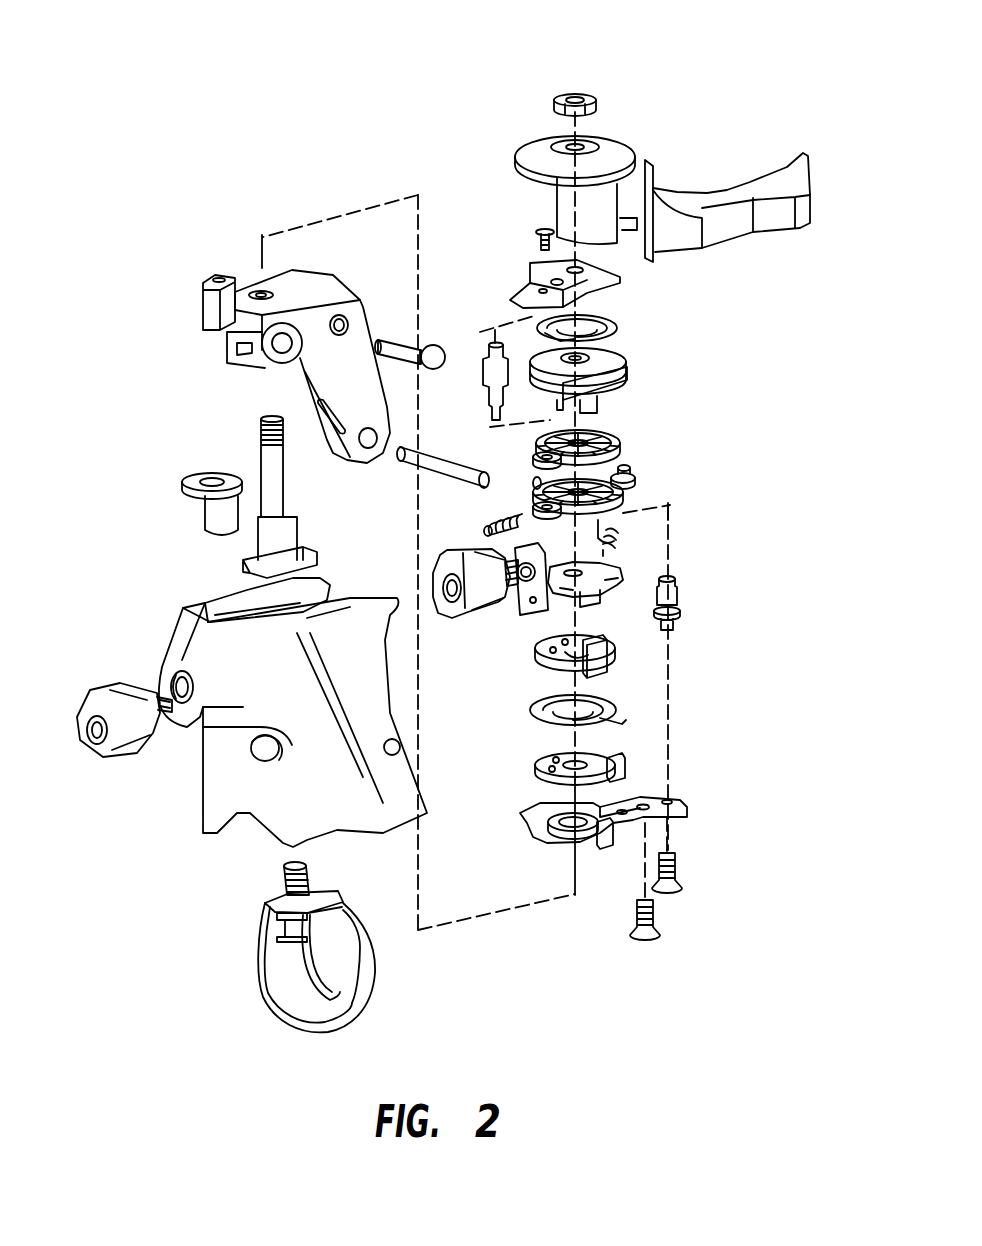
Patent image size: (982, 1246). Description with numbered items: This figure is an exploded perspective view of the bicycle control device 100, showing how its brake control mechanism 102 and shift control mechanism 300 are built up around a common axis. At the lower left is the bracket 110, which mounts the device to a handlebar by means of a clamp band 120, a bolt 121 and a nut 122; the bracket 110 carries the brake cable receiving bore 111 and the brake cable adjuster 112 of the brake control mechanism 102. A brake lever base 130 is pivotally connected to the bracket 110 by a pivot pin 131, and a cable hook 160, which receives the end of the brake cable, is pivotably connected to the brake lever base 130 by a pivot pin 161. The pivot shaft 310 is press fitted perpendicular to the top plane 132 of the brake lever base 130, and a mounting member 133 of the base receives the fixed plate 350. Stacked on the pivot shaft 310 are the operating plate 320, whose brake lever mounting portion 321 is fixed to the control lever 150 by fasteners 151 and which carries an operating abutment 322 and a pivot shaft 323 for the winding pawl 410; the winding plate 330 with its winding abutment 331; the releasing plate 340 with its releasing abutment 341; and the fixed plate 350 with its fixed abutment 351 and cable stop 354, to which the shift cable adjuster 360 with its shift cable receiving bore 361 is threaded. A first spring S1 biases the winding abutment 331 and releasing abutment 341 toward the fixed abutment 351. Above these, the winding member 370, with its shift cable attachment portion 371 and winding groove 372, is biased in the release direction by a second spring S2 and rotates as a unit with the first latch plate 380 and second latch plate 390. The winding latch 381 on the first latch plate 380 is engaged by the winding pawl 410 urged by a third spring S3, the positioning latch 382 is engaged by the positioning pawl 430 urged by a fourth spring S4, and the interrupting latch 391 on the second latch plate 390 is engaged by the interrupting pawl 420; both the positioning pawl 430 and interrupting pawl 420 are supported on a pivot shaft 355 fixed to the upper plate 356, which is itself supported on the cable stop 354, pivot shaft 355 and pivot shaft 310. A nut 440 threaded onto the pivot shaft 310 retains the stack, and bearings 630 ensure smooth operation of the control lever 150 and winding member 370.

The bicycle control device 100 is at (420, 85).
The brake control mechanism 102 is at (125, 330).
The bracket 110 is at (210, 800).
The brake cable receiving bore 111 is at (172, 690).
The brake cable adjuster 112 is at (103, 697).
The clamp band 120 is at (338, 1025).
The bolt 121 is at (315, 895).
The nut 122 is at (205, 512).
The brake lever base 130 is at (308, 283).
The pivot pin 131 is at (430, 467).
The top plane 132 is at (268, 294).
The mounting member 133 is at (208, 297).
The control lever 150 is at (803, 180).
The fasteners 151 is at (669, 895).
The cable hook 160 is at (233, 363).
The pivot pin 161 is at (398, 345).
The shift control mechanism 300 is at (712, 924).
The pivot shaft 310 is at (262, 457).
The operating plate 320 is at (688, 811).
The brake lever mounting portion 321 is at (688, 793).
The operating abutment 322 is at (611, 835).
The pivot shaft 323 is at (682, 598).
The winding plate 330 is at (597, 760).
The winding abutment 331 is at (626, 766).
The releasing plate 340 is at (608, 646).
The releasing abutment 341 is at (608, 660).
The fixed plate 350 is at (622, 564).
The fixed abutment 351 is at (596, 602).
The cable stop 354 is at (513, 557).
The pivot shaft 355 is at (485, 372).
The upper plate 356 is at (614, 268).
The shift cable adjuster 360 is at (453, 613).
The shift cable receiving bore 361 is at (515, 590).
The winding member 370 is at (612, 366).
The shift cable attachment portion 371 is at (632, 381).
The winding groove 372 is at (598, 392).
The first latch plate 380 is at (637, 500).
The winding latch 381 is at (637, 482).
The positioning latch 382 is at (533, 500).
The second latch plate 390 is at (620, 441).
The interrupting latch 391 is at (527, 448).
The winding pawl 410 is at (632, 467).
The interrupting pawl 420 is at (534, 482).
The positioning pawl 430 is at (527, 510).
The nut 440 is at (588, 93).
The bearings 630 is at (592, 142).
The first spring S1 is at (618, 700).
The second spring S2 is at (618, 325).
The third spring S3 is at (625, 533).
The fourth spring S4 is at (485, 532).